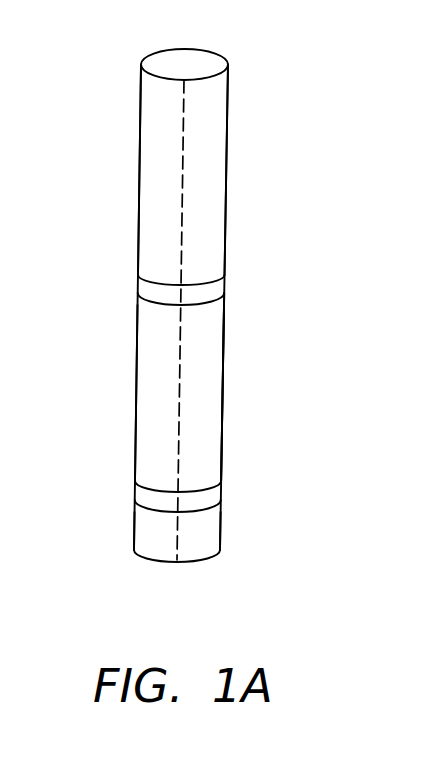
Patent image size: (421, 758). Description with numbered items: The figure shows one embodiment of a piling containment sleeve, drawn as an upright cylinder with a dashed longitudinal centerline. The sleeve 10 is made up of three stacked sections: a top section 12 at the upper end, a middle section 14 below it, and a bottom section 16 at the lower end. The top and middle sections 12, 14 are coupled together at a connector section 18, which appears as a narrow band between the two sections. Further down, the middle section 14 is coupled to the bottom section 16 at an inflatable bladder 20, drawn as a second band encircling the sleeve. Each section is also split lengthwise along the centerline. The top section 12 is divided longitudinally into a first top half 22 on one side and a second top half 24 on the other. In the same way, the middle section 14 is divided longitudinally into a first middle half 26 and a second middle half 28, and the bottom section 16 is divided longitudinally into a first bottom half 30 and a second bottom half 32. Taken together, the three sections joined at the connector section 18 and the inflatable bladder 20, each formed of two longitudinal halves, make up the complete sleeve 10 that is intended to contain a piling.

The sleeve 10 is at (238, 110).
The top section 12 is at (229, 61).
The middle section 14 is at (223, 468).
The bottom section 16 is at (222, 549).
The connector section 18 is at (227, 283).
The inflatable bladder 20 is at (222, 490).
The first top half 22 is at (152, 170).
The second top half 24 is at (213, 192).
The first middle half 26 is at (150, 362).
The second middle half 28 is at (210, 387).
The first bottom half 30 is at (145, 532).
The second bottom half 32 is at (207, 525).